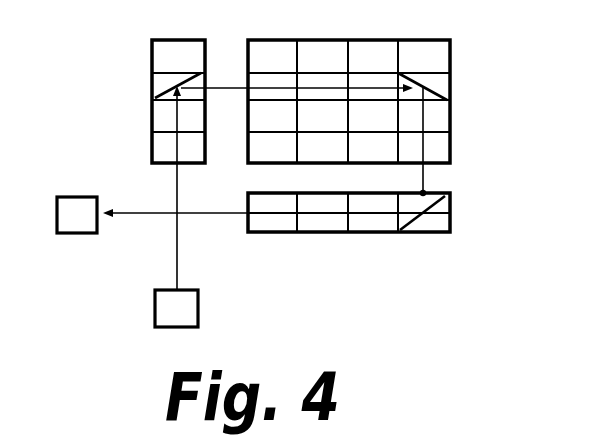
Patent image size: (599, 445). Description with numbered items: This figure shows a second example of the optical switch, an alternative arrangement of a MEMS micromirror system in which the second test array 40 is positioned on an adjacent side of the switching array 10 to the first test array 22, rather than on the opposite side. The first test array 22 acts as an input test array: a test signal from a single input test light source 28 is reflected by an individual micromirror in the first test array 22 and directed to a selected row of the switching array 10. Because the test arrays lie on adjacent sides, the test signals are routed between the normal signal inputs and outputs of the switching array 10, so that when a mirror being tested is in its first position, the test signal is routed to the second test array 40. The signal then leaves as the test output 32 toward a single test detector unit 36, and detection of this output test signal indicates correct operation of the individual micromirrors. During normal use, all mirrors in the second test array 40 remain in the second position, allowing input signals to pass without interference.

The switching array 10 is at (450, 88).
The first test array of micromirrors 22 is at (152, 73).
The input test light source 28 is at (199, 312).
The test output 32 is at (225, 215).
The test detector unit 36 is at (73, 205).
The second test array 40 is at (424, 233).